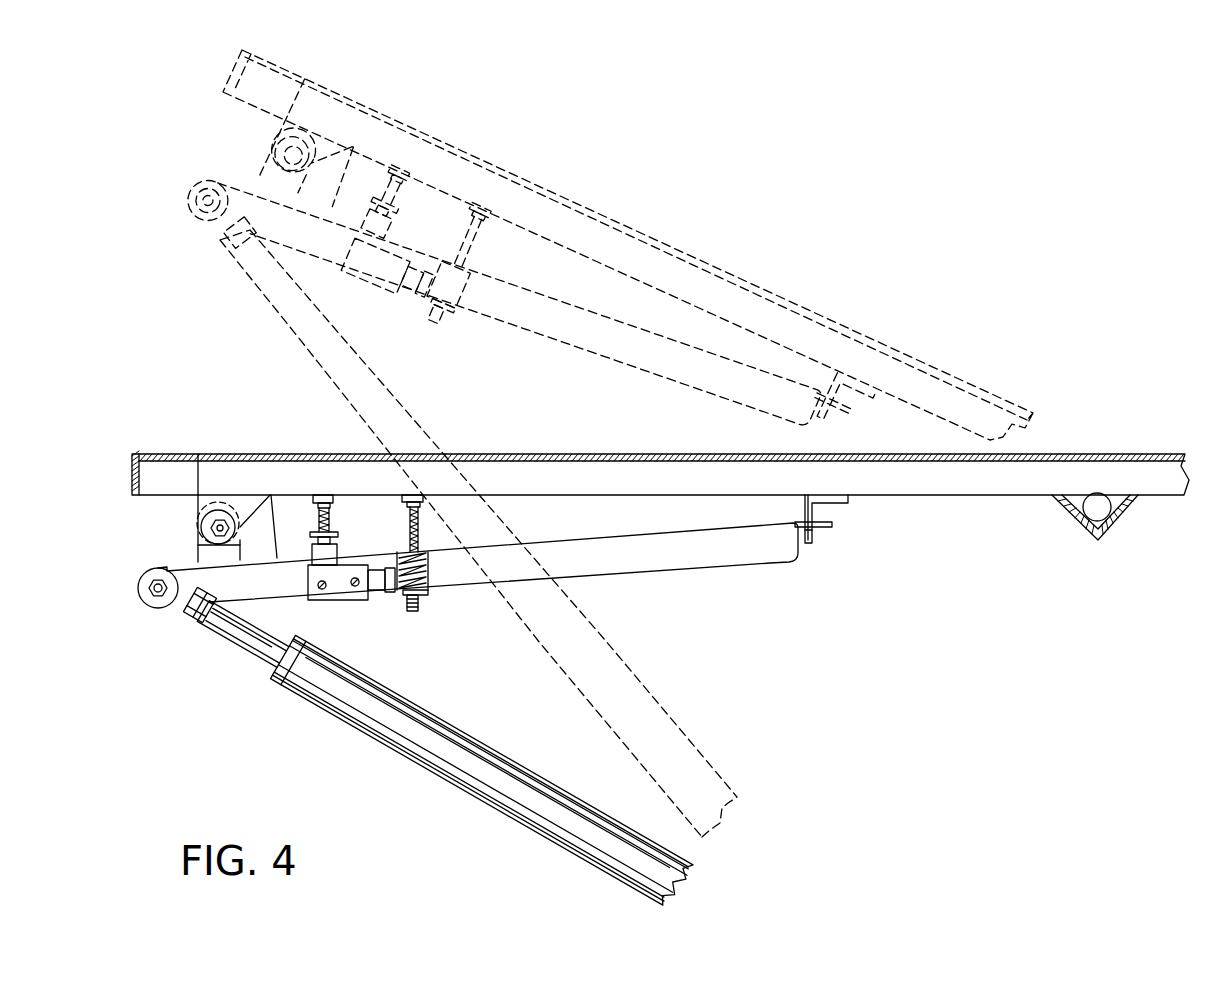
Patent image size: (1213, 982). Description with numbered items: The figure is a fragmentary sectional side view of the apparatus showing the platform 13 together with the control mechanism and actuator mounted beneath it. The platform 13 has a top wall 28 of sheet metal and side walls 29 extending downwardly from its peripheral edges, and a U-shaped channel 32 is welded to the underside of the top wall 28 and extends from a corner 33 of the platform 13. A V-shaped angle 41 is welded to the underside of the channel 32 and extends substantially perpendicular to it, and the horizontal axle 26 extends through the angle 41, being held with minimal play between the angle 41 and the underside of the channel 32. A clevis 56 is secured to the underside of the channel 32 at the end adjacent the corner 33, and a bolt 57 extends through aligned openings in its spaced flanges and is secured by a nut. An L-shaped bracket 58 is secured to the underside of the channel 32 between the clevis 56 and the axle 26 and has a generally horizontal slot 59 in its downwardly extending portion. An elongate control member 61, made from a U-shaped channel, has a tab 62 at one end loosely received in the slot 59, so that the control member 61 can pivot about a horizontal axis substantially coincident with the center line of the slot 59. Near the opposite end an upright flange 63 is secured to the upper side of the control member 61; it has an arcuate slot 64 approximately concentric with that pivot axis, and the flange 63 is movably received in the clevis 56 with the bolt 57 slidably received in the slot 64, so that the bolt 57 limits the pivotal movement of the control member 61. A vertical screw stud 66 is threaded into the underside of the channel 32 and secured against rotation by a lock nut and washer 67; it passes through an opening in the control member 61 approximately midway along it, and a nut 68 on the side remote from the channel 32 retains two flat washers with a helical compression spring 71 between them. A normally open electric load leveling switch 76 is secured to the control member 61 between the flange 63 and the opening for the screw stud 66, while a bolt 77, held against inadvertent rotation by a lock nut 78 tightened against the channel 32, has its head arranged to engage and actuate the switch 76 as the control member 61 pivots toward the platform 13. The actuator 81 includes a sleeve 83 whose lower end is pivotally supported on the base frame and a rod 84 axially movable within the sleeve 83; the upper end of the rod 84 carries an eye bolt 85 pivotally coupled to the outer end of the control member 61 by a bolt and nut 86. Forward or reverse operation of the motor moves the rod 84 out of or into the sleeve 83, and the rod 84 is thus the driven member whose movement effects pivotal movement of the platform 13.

The platform 13 is at (649, 438).
The horizontal axle 26 is at (1098, 513).
The top wall 28 is at (636, 455).
The side walls 29 is at (146, 492).
The U-shaped channel 32 is at (541, 478).
The corner 33 is at (135, 456).
The V-shaped angle 41 is at (1125, 519).
The clevis 56 is at (250, 498).
The bolt 57 is at (210, 530).
The L-shaped bracket 58 is at (847, 504).
The slot 59 is at (814, 537).
The control member 61 is at (627, 552).
The tab 62 is at (832, 524).
The upright flange 63 is at (200, 546).
The arcuate slot 64 is at (212, 511).
The screw stud 66 is at (432, 526).
The lock nut and washer 67 is at (426, 504).
The nut 68 is at (412, 603).
The helical compression spring 71 is at (430, 578).
The load leveling switch 76 is at (340, 580).
The bolt 77 is at (331, 522).
The lock nut 78 is at (331, 500).
The actuator 81 is at (432, 774).
The sleeve 83 is at (421, 785).
The rod 84 is at (248, 640).
The eye bolt 85 is at (190, 614).
The bolt and nut 86 is at (148, 602).